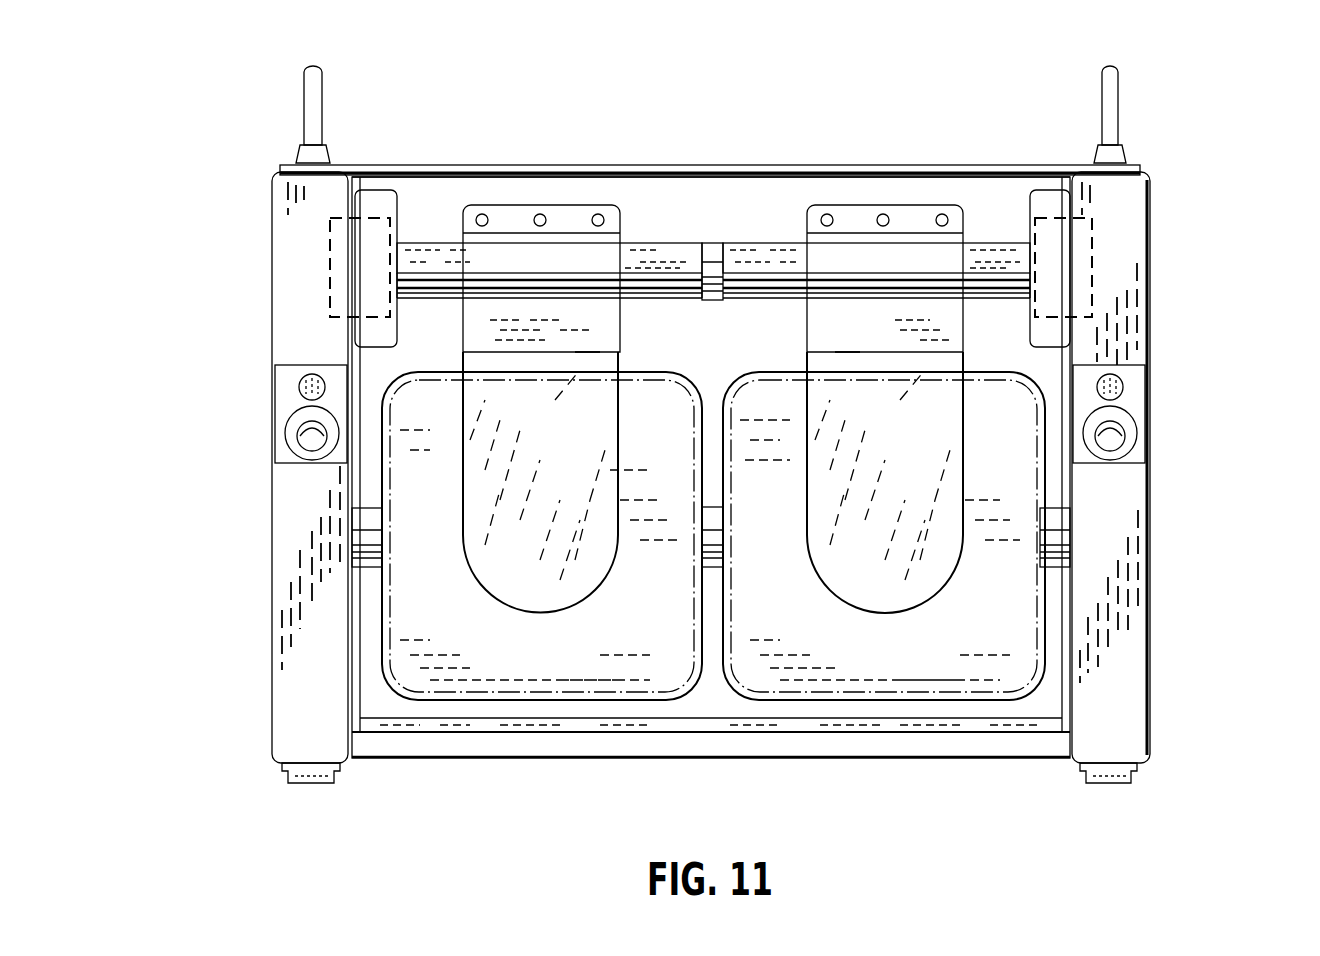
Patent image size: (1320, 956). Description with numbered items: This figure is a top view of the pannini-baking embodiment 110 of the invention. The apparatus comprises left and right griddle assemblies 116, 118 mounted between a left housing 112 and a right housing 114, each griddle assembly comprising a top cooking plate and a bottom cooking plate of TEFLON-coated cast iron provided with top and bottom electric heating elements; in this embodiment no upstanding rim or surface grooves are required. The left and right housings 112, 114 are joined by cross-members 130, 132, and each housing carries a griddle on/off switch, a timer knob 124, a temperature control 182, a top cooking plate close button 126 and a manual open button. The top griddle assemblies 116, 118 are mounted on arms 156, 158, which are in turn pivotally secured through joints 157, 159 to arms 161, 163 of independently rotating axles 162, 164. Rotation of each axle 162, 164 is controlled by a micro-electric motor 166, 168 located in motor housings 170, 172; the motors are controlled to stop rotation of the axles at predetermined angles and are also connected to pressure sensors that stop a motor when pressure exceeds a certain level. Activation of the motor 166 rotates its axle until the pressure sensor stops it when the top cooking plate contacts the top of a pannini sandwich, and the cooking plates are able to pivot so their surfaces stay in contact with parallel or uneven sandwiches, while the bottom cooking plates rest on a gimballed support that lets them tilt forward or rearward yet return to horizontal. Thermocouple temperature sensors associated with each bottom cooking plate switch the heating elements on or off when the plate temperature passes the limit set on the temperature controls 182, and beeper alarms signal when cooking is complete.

The pannini baking embodiment 110 is at (1207, 770).
The left housing 112 is at (268, 548).
The right housing 114 is at (1155, 597).
The left griddle assembly 116 is at (572, 702).
The right griddle assembly 118 is at (905, 700).
The timer knob 124 is at (298, 430).
The top cooking plate close button 126 is at (328, 785).
The cross-member 130 is at (711, 493).
The cross-member 132 is at (920, 165).
The arm 156 is at (555, 490).
The joint 157 is at (585, 350).
The arm 158 is at (907, 540).
The second hinge 159 is at (848, 350).
The arm 161 is at (550, 295).
The independently rotating axle 162 is at (648, 240).
The arm 163 is at (895, 295).
The independently rotating axle 164 is at (765, 240).
The micro-electric motor 166 is at (328, 268).
The micro-electric motor 168 is at (1095, 250).
The motor housing 170 is at (396, 193).
The motor housing 172 is at (1052, 195).
The temperature control 182 is at (298, 378).